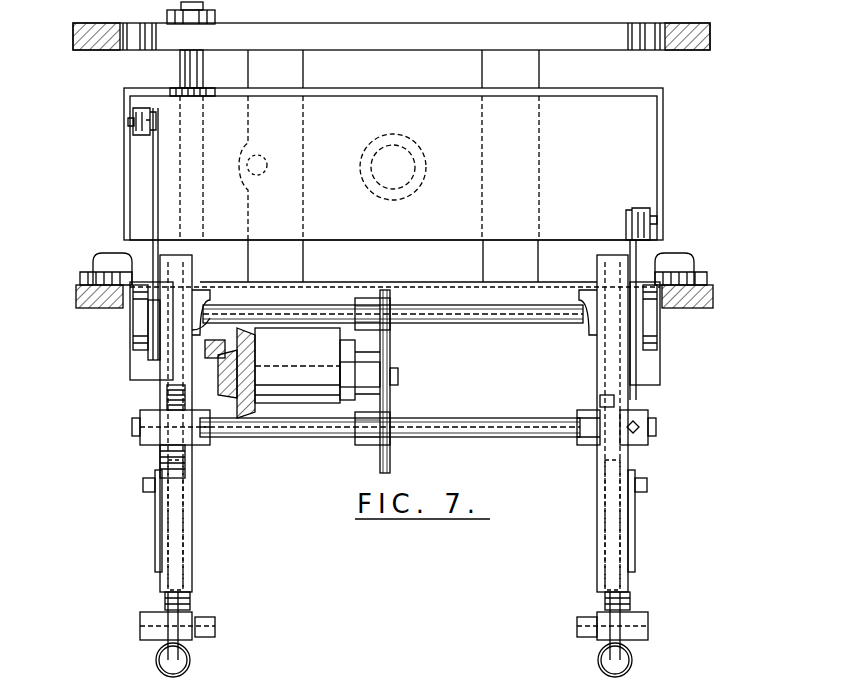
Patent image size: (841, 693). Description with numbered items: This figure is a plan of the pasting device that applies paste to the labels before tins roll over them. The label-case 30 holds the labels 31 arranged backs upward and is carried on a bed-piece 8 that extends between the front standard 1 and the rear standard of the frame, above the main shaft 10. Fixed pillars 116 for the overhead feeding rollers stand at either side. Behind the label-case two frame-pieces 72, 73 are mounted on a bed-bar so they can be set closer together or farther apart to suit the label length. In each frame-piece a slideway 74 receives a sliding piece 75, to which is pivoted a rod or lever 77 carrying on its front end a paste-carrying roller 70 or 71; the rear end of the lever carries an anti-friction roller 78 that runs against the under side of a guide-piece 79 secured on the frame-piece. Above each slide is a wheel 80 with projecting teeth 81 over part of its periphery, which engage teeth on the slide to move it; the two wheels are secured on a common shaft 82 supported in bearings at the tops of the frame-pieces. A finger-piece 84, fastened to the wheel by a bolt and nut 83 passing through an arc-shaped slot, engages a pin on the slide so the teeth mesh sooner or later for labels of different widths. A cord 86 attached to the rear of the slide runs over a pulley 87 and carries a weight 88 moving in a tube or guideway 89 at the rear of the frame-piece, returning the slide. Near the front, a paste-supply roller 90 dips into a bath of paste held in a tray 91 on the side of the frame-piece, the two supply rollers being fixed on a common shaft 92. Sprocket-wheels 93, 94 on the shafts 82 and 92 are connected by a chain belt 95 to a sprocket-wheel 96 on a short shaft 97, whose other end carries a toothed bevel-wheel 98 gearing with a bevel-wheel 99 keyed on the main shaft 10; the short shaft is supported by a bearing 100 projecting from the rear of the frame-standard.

The front standard 1 is at (391, 36).
The bed-piece 8 is at (395, 168).
The main shaft 10 is at (188, 66).
The label-case 30 is at (658, 143).
The labels 31 is at (412, 167).
The paste-carrying roller 70 is at (130, 122).
The paste-carrying roller 71 is at (640, 210).
The frame-piece 72 is at (187, 274).
The frame-piece 73 is at (602, 265).
The slideway 74 is at (176, 572).
The sliding piece 75 is at (636, 500).
The rod or lever 77 is at (156, 201).
The anti-friction roller 78 is at (152, 355).
The guide-piece 79 is at (158, 518).
The wheel 80 is at (164, 452).
The projecting teeth 81 is at (167, 403).
The shaft 82 is at (468, 428).
The bolt and nut 83 is at (150, 424).
The finger-piece 84 is at (614, 397).
The cord 86 is at (168, 596).
The pulley 87 is at (160, 625).
The weight 88 is at (165, 662).
The tube or guideway 89 is at (187, 665).
The paste-supply roller 90 is at (133, 330).
The tray 91 is at (395, 333).
The shaft 92 is at (523, 317).
The sprocket-wheel 93 is at (370, 434).
The sprocket-wheel 94 is at (364, 300).
The chain belt 95 is at (390, 350).
The sprocket-wheel 96 is at (350, 378).
The short shaft 97 is at (398, 377).
The toothed bevel-wheel 98 is at (243, 405).
The bevel-wheel 99 is at (227, 385).
The bearing 100 is at (297, 365).
The fixed pillars 116 is at (90, 296).